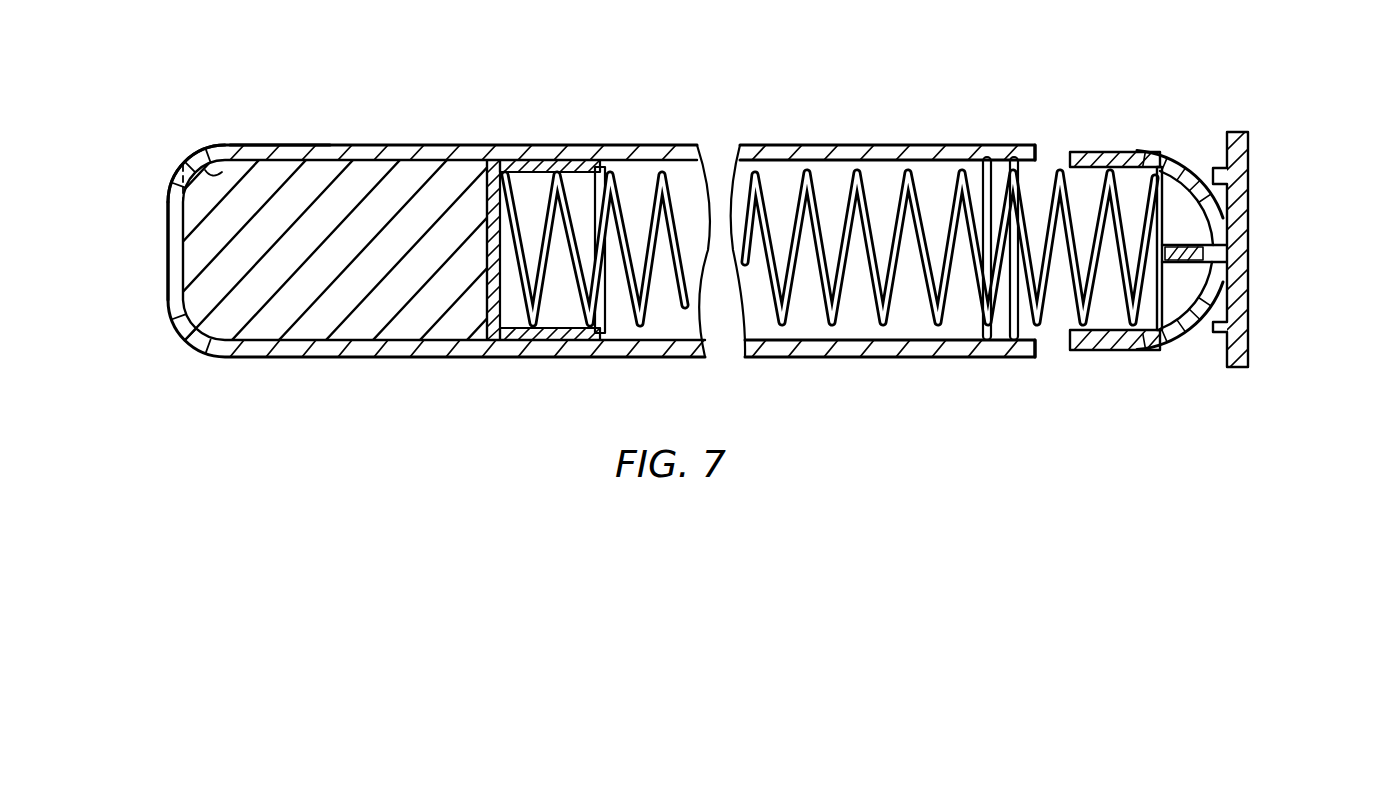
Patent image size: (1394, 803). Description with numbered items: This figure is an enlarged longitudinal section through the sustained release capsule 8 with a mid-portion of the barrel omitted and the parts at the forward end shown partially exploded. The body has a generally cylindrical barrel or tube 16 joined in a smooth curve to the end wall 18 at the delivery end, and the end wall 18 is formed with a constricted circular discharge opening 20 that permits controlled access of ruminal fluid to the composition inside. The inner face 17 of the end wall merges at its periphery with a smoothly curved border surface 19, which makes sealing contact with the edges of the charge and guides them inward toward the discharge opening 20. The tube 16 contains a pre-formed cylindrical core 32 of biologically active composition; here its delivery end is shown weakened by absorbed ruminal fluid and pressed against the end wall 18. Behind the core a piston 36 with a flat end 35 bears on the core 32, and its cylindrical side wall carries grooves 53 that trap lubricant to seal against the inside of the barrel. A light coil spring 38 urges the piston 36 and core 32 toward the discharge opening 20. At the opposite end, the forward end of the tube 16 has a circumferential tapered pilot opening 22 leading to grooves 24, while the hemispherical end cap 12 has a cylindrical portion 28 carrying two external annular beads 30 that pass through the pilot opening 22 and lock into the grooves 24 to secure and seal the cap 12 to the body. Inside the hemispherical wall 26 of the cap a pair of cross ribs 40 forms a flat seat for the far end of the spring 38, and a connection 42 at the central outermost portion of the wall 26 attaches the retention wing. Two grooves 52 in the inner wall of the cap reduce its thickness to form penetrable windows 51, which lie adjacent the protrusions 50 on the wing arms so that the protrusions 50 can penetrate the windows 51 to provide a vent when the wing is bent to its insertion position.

The sustained release capsule 8 is at (632, 118).
The end cap 12 is at (1158, 356).
The barrel or tube 16 is at (672, 143).
The inner face 17 is at (256, 152).
The end wall 18 is at (176, 152).
The border surface 19 is at (224, 152).
The discharge opening 20 is at (167, 278).
The tapered pilot opening 22 is at (1038, 345).
The grooves 24 is at (1016, 160).
The hemispherical wall 26 is at (1163, 147).
The cylindrical portion 28 is at (1095, 152).
The annular beads 30 is at (1113, 350).
The core of biologically active composition 32 is at (327, 313).
The flat end 35 is at (470, 197).
The piston 36 is at (505, 147).
The coil spring 38 is at (767, 193).
The cross ribs 40 is at (1190, 225).
The connection 42 is at (1212, 258).
The protrusion 50 is at (1185, 190).
The penetrable windows 51 is at (1205, 337).
The grooves 52 is at (1200, 152).
The grooves 53 is at (516, 350).